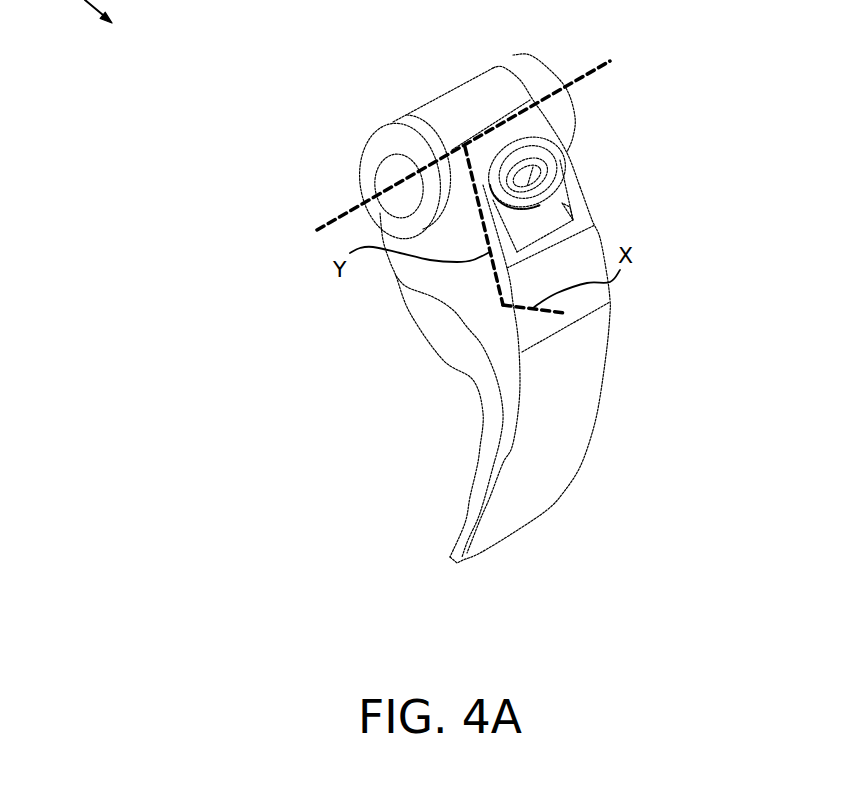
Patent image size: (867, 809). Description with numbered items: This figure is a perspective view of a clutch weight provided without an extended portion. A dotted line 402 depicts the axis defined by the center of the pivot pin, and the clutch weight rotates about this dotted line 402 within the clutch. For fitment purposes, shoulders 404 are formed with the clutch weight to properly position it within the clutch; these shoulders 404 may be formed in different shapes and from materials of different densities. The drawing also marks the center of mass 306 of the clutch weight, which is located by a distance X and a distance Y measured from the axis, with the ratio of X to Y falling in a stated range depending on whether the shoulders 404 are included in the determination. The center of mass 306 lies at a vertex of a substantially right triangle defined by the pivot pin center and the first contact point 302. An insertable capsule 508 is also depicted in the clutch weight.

The first contact point 302 is at (575, 315).
The center of mass 306 is at (503, 305).
The dotted line 402 is at (317, 230).
The shoulders 404 is at (377, 130).
The insertable capsule 508 is at (560, 178).